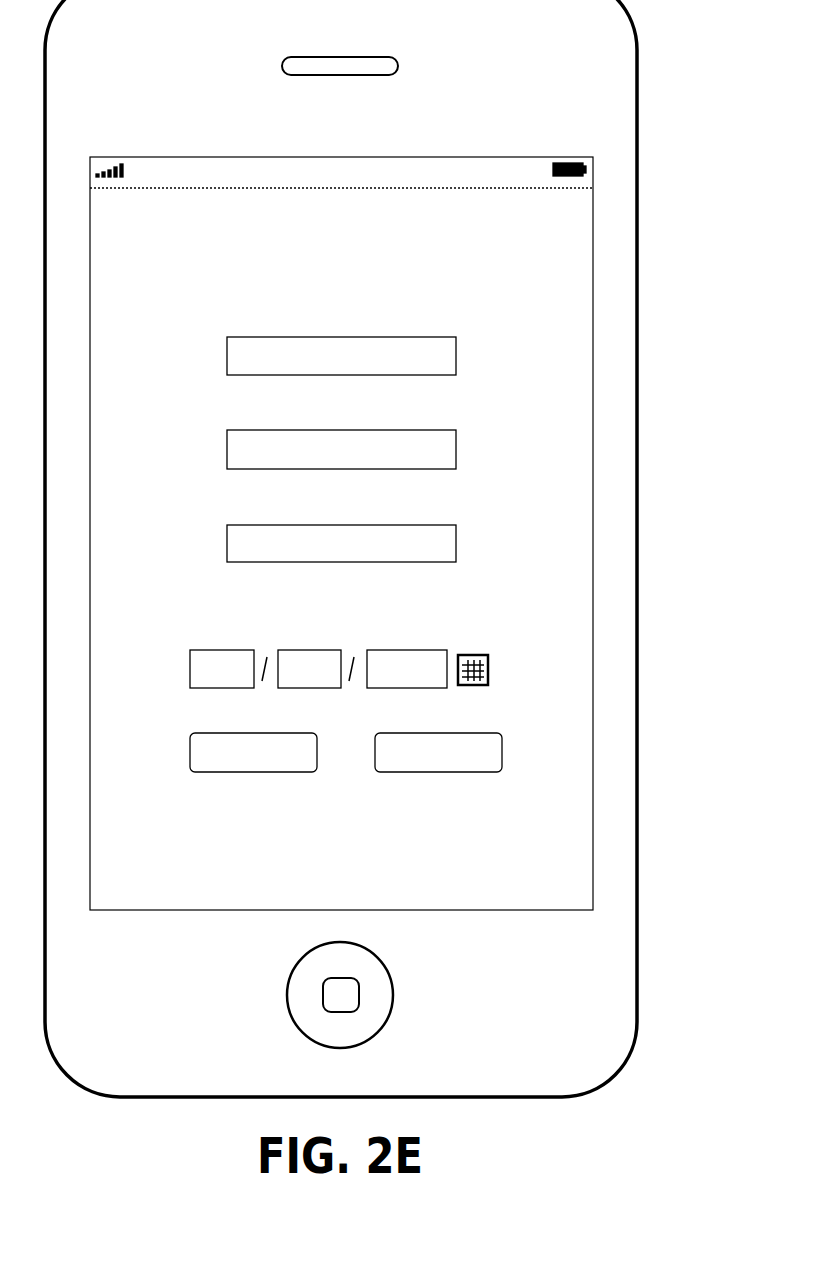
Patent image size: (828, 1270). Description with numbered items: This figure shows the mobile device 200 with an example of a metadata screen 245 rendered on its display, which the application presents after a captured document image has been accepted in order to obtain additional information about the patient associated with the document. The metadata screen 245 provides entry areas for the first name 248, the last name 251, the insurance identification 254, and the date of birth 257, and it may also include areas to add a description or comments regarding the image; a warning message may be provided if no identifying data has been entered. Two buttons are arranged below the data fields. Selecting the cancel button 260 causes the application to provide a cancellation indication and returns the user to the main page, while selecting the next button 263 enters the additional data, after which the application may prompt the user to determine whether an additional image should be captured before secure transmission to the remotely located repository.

The mobile device 200 is at (652, 108).
The metadata screen 245 is at (571, 408).
The first name 248 is at (227, 357).
The last name 251 is at (227, 450).
The insurance identification 254 is at (227, 543).
The date of birth 257 is at (190, 670).
The cancel button 260 is at (502, 753).
The next button 263 is at (190, 753).